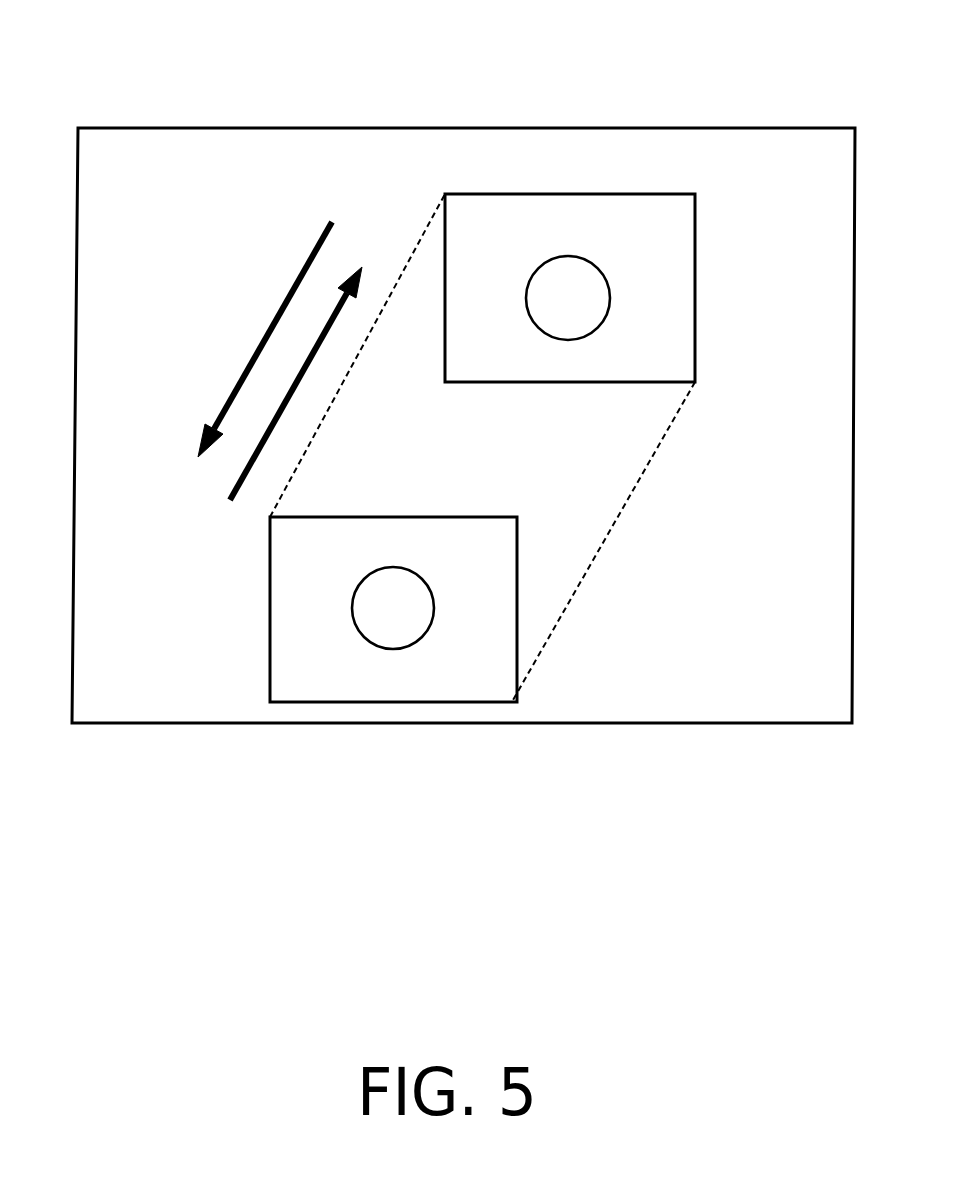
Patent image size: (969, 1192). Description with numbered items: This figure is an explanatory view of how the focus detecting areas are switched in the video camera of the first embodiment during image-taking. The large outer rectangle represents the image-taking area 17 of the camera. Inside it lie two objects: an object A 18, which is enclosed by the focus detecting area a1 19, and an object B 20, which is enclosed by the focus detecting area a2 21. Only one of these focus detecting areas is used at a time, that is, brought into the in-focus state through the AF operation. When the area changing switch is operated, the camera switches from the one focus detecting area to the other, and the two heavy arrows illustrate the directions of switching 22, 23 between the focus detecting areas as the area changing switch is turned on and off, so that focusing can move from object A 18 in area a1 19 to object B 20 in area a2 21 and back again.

The image-taking area 17 is at (150, 150).
The object A 18 is at (395, 568).
The focus detecting area a1 19 is at (498, 692).
The object B 20 is at (570, 255).
The focus detecting area a2 21 is at (667, 357).
The direction of switching between the focus detecting areas 22 is at (302, 367).
The direction of switching between the focus detecting areas 23 is at (306, 263).